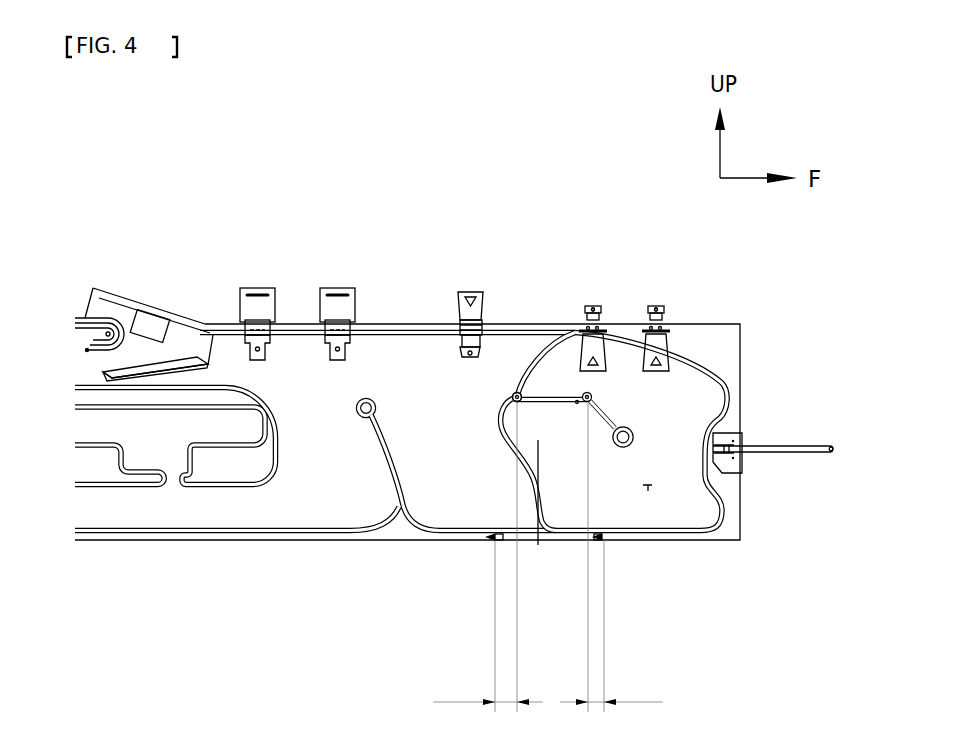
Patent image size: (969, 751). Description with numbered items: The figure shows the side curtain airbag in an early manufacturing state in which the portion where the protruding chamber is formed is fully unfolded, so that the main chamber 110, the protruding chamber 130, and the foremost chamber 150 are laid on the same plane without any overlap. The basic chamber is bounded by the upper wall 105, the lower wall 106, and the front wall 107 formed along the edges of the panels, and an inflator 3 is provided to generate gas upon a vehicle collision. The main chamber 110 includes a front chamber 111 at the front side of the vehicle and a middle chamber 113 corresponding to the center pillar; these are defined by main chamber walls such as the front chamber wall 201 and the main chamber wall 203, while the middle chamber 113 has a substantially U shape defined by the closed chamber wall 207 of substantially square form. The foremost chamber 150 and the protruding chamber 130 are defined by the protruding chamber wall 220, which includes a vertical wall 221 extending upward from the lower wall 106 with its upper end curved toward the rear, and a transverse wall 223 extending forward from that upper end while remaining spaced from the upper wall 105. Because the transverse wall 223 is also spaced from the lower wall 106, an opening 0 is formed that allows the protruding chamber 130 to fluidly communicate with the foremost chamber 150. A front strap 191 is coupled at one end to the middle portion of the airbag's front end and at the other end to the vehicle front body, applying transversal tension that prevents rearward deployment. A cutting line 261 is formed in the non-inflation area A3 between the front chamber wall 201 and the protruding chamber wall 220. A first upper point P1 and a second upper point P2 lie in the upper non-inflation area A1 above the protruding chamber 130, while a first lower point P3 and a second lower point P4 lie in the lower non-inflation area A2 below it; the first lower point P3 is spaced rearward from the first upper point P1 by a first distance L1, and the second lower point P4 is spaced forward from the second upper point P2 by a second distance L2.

The main chamber 110 is at (395, 198).
The front chamber 111 is at (430, 457).
The middle chamber 113 is at (347, 463).
The upper wall 105 is at (436, 330).
The inflator 3 is at (118, 300).
The closed chamber wall 207 is at (215, 488).
The main chamber wall 203 is at (383, 455).
The lower wall 106 is at (418, 540).
The protruding chamber 130 is at (650, 434).
The protruding chamber wall 220 is at (705, 365).
The front chamber wall 201 is at (503, 400).
The vertical wall 221 is at (612, 525).
The transverse wall 223 is at (627, 435).
The cutting line 261 is at (605, 345).
The front wall 107 is at (730, 507).
The foremost chamber 150 is at (718, 525).
The opening 0 is at (652, 490).
The front strap 191 is at (782, 453).
The first upper point P1 is at (565, 330).
The second upper point P2 is at (700, 340).
The first lower point P3 is at (482, 535).
The second lower point P4 is at (605, 540).
The upper non-inflation area A1 is at (655, 325).
The lower non-inflation area A2 is at (527, 537).
The non-inflation area A3 is at (542, 527).
The first distance L1 is at (488, 689).
The second distance L2 is at (611, 689).